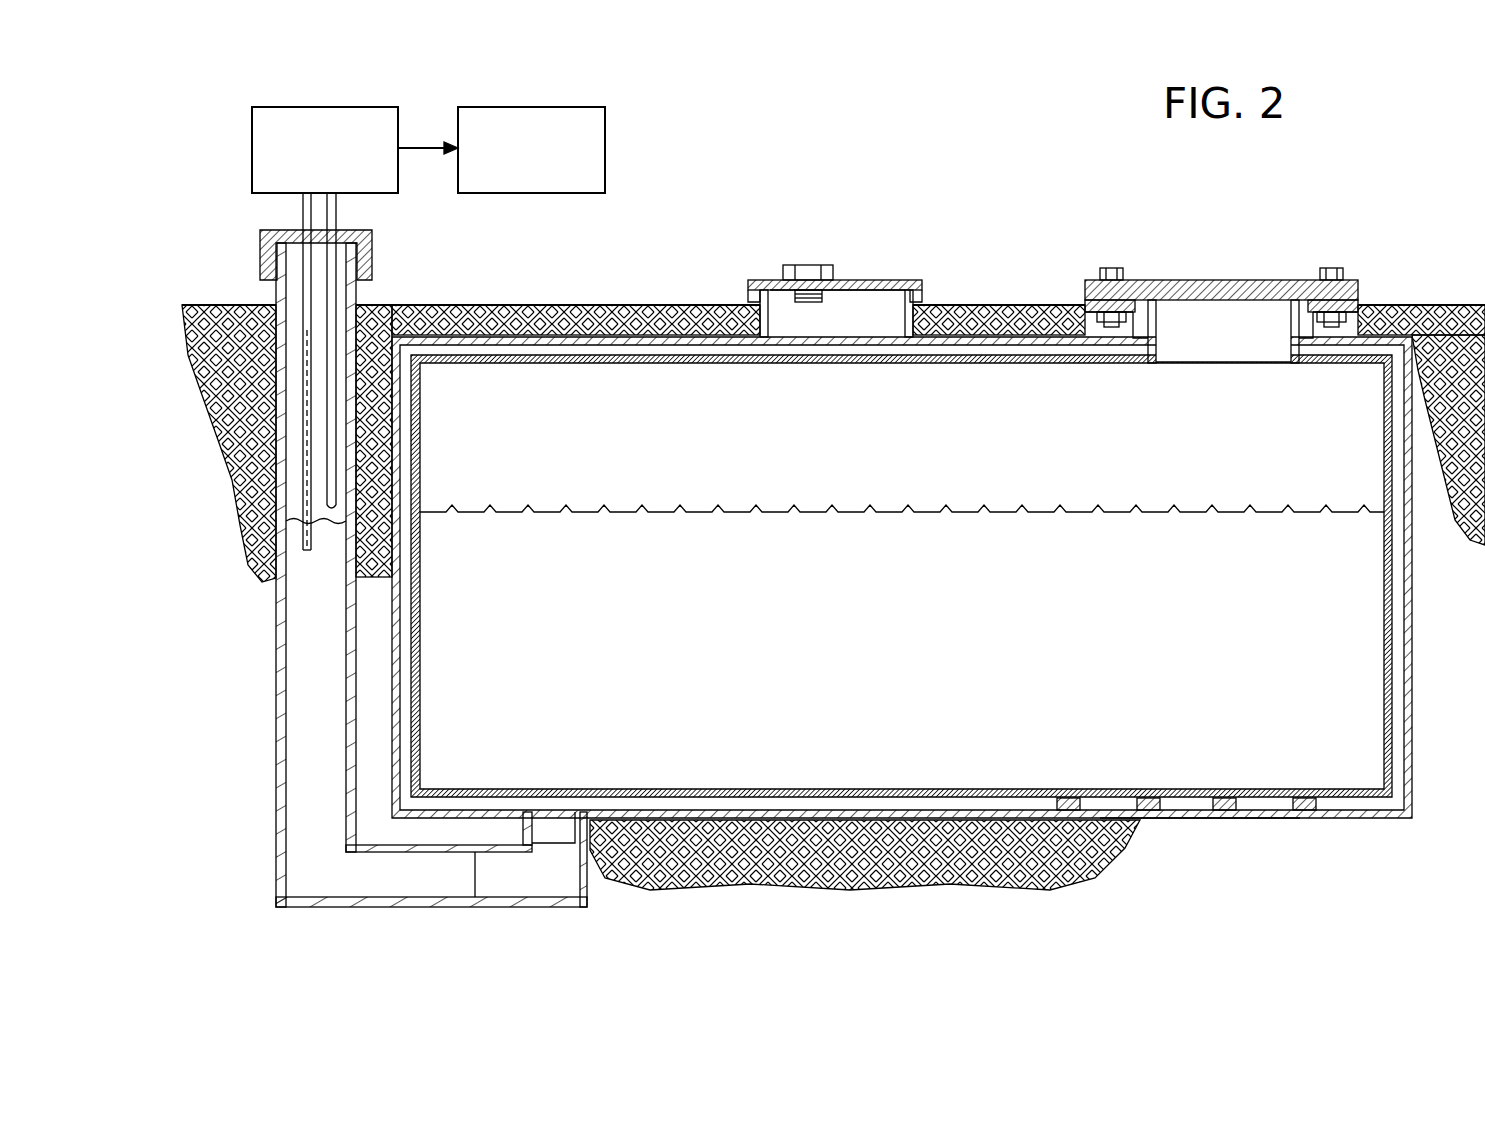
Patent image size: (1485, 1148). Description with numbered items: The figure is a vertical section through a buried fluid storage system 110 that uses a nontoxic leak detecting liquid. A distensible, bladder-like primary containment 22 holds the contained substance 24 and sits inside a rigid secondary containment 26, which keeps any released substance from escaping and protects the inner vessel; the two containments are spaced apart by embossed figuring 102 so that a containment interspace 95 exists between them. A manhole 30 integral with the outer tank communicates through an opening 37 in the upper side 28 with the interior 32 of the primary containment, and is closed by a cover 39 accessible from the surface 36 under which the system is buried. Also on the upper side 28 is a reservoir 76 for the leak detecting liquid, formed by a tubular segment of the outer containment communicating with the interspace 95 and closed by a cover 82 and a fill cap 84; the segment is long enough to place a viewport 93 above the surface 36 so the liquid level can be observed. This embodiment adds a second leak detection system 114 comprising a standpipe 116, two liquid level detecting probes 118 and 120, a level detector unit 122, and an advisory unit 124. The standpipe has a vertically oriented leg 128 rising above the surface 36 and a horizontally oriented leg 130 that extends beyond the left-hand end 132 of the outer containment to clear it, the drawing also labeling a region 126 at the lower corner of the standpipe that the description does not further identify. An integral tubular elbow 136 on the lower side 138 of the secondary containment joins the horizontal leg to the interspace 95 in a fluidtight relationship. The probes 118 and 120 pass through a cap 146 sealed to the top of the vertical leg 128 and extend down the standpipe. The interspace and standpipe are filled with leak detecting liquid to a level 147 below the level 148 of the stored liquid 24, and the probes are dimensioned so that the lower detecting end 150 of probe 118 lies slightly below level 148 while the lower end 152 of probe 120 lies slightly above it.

The primary containment 22 is at (1393, 603).
The contained substance 24 is at (597, 618).
The secondary containment 26 is at (1412, 683).
The upper side 28 is at (458, 332).
The manhole 30 is at (1135, 357).
The interior 32 is at (607, 372).
The surface 36 is at (1257, 299).
The opening 37 is at (1291, 330).
The cover 39 is at (1228, 280).
The reservoir 76 is at (883, 271).
The cover 82 is at (895, 280).
The fill cap 84 is at (792, 265).
The viewport 93 is at (862, 285).
The containment interspace 95 is at (408, 555).
The embossed containment figuring 102 is at (1233, 812).
The fluid storage system 110 is at (802, 214).
The second leak detection system 114 is at (384, 329).
The standpipe 116 is at (417, 591).
The liquid level detecting probe 118 is at (335, 371).
The liquid level detecting probe 120 is at (336, 441).
The level detector unit 122 is at (318, 107).
The advisory unit 124 is at (572, 107).
The sump chamber 126 is at (588, 888).
The vertically oriented leg 128 is at (420, 591).
The horizontally oriented leg 130 is at (375, 907).
The left-hand end 132 is at (347, 772).
The tubular elbow 136 is at (565, 830).
The lower side 138 is at (1190, 818).
The cap 146 is at (260, 250).
The leak detecting liquid level 147 is at (286, 521).
The level of stored liquid 148 is at (658, 510).
The lower liquid level detecting end 150 is at (268, 578).
The lower end 152 is at (360, 505).